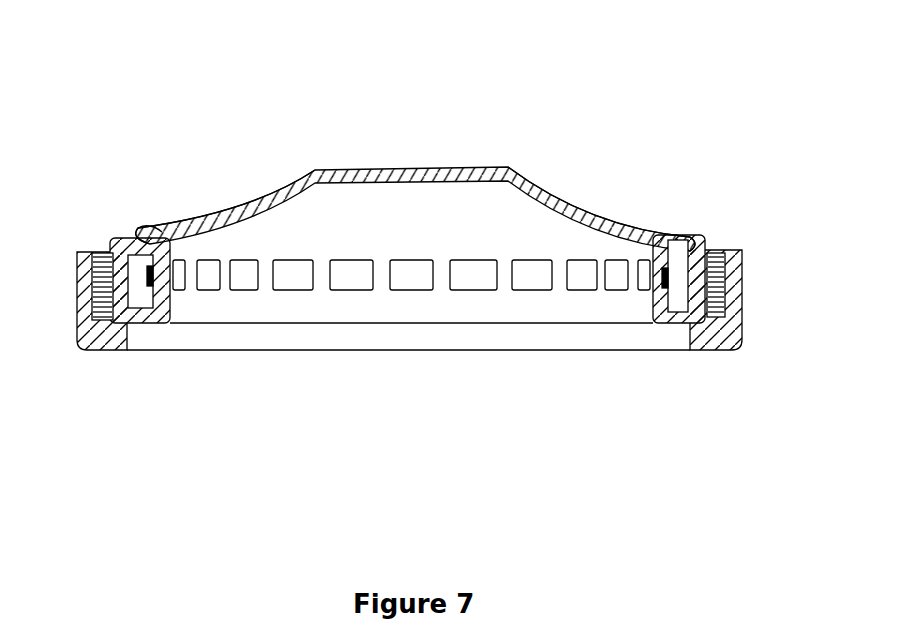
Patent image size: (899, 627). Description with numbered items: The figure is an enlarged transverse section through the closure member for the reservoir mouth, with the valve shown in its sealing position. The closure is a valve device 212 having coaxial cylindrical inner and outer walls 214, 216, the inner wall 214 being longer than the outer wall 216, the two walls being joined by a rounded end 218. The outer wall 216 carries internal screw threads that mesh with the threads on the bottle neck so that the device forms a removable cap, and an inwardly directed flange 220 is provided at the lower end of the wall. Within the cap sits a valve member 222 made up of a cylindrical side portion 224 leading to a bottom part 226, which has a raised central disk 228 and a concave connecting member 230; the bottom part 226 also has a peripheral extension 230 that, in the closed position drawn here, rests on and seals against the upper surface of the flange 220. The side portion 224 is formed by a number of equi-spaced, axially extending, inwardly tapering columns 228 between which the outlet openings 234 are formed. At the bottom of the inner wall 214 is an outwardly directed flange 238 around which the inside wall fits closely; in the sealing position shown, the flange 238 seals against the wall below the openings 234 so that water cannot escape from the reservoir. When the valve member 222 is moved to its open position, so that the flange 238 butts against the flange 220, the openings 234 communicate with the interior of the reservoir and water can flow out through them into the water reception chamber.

The valve device 212 is at (407, 229).
The inner wall 214 is at (77, 312).
The outer wall 216 is at (90, 250).
The rounded end 218 is at (100, 342).
The inwardly directed flange 220 is at (137, 233).
The valve member 222 is at (293, 180).
The cylindrical side portion 224 is at (173, 230).
The bottom part 226 is at (595, 207).
The columns 228 is at (473, 168).
The peripheral extension 230 is at (693, 227).
The outlet openings 234 is at (355, 267).
The outwardly directed flange 238 is at (145, 320).